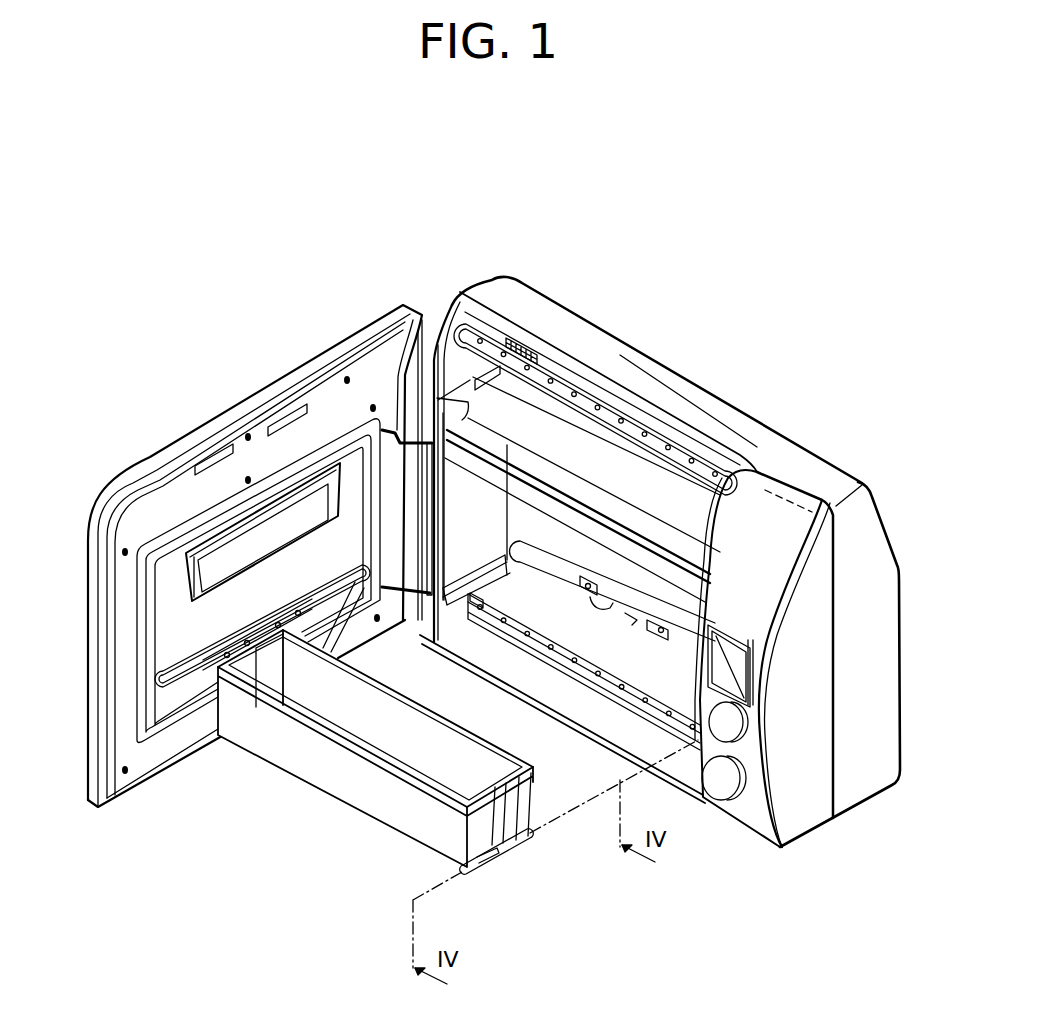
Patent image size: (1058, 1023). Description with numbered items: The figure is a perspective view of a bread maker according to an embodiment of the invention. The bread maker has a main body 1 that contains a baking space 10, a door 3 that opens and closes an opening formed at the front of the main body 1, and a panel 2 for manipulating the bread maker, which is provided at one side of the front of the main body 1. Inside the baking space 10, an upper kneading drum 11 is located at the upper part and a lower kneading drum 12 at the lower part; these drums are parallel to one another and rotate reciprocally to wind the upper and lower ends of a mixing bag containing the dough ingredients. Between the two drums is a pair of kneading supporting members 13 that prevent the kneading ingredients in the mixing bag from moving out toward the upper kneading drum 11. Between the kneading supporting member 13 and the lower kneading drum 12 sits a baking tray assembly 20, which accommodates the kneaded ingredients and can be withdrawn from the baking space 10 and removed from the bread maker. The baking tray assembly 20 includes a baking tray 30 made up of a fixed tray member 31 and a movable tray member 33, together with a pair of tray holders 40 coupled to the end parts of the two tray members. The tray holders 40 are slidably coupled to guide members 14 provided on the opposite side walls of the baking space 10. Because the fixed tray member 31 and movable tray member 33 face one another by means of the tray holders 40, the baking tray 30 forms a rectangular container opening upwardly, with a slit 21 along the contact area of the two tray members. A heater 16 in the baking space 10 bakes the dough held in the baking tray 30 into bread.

The main body 1 is at (652, 546).
The panel 2 is at (752, 820).
The door 3 is at (255, 556).
The baking space 10 is at (480, 568).
The upper kneading drum 11 is at (688, 447).
The lower kneading drum 12 is at (522, 620).
The kneading supporting member 13 is at (607, 540).
The guide member 14 is at (445, 603).
The heater 16 is at (656, 632).
The baking tray assembly 20 is at (418, 806).
The slit 21 is at (255, 668).
The baking tray 30 is at (547, 851).
The fixed tray member 31 is at (523, 810).
The movable tray member 33 is at (487, 828).
The tray holder 40 is at (497, 865).